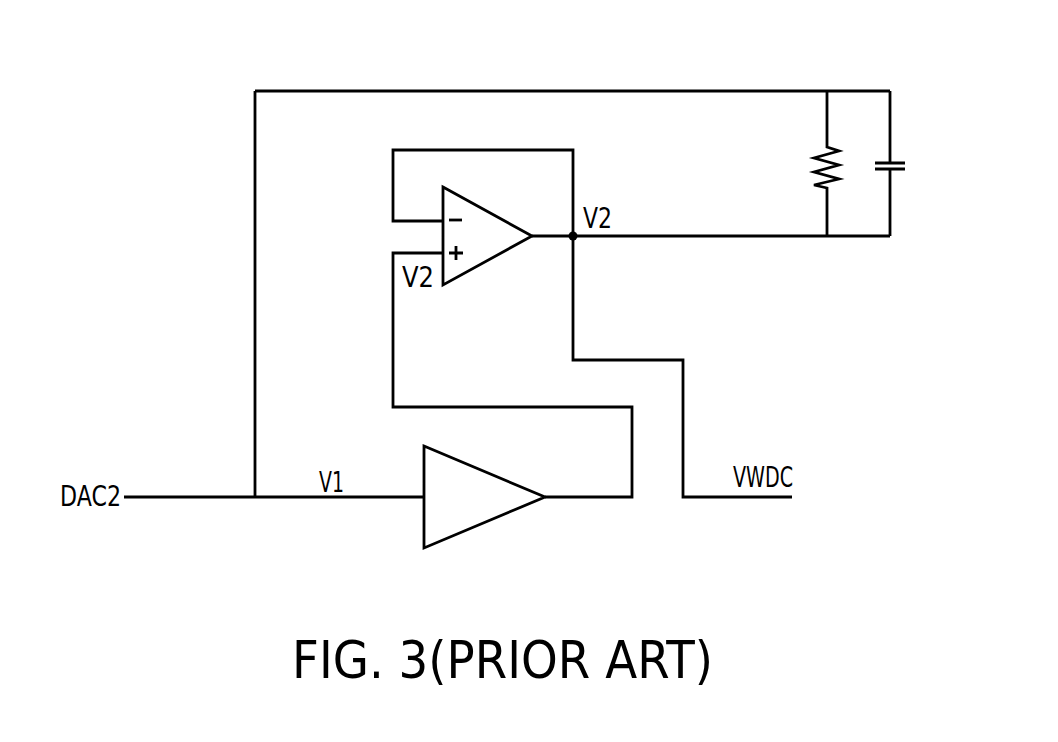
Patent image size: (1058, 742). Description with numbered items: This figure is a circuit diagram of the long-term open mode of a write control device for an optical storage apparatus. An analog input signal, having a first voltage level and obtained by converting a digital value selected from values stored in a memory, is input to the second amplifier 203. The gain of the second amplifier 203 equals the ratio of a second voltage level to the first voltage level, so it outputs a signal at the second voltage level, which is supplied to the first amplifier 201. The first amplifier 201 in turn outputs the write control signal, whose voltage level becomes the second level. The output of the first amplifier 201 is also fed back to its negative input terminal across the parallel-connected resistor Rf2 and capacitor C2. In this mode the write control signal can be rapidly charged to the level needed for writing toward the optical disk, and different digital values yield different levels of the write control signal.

The first amplifier 201 is at (488, 262).
The second amplifier 203 is at (485, 523).
The resistor Rf2 is at (797, 163).
The capacitor C2 is at (910, 163).